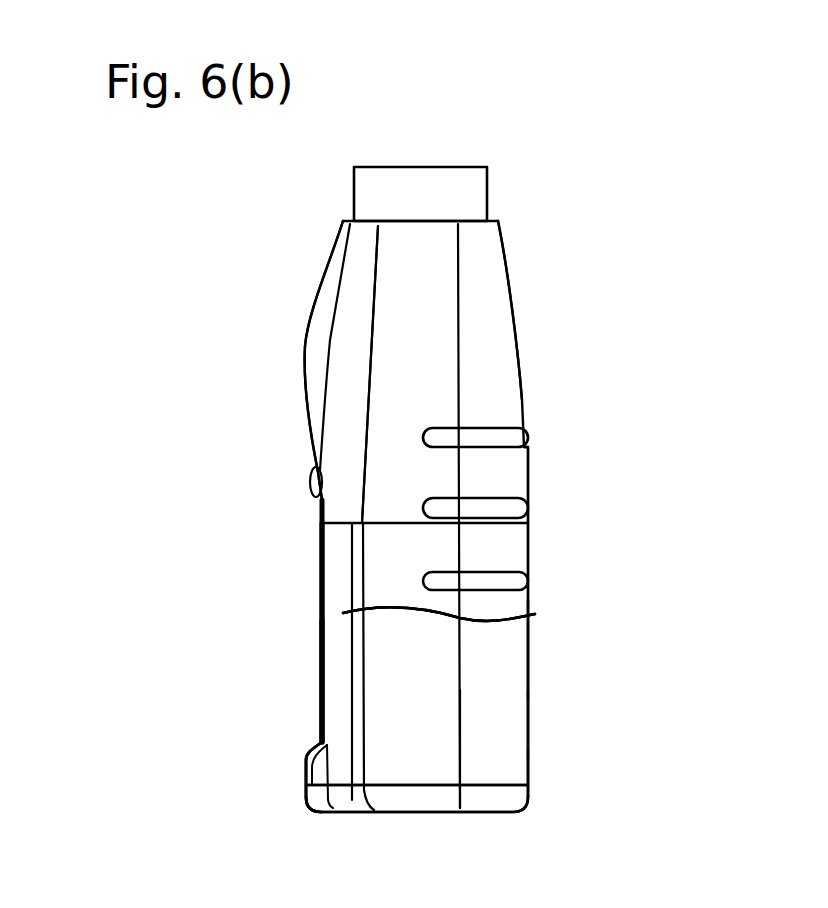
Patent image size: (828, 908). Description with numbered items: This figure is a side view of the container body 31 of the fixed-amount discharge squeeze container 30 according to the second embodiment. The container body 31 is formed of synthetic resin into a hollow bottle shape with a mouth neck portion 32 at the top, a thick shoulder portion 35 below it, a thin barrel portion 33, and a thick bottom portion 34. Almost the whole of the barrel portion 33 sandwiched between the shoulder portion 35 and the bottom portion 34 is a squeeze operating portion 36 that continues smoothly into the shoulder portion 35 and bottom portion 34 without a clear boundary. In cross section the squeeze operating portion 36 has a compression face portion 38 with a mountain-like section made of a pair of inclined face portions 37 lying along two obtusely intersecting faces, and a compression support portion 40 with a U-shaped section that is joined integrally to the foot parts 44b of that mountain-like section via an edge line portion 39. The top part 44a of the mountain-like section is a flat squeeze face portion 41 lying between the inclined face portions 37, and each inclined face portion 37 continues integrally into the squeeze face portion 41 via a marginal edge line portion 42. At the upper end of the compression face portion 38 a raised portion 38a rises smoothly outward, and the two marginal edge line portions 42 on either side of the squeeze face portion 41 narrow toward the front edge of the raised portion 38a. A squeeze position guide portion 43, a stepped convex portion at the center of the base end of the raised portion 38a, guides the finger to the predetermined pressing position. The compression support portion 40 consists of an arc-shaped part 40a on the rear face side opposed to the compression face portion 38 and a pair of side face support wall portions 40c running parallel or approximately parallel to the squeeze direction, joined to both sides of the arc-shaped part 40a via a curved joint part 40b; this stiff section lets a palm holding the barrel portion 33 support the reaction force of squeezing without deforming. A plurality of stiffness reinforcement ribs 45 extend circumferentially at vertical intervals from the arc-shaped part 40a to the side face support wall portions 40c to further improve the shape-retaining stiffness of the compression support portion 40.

The fixed-amount discharge squeeze container 30 is at (312, 220).
The container body 31 is at (511, 287).
The mouth neck portion 32 is at (462, 191).
The barrel portion 33 is at (487, 388).
The bottom portion 34 is at (495, 802).
The shoulder portion 35 is at (358, 272).
The squeeze operating portion 36 is at (322, 560).
The inclined face portions 37 is at (530, 617).
The compression face portion 38 is at (320, 668).
The raised portion 38a is at (306, 397).
The edge line portion 39 is at (357, 755).
The compression support portion 40 is at (503, 481).
The arc-shaped part 40a is at (532, 655).
The curved joint part 40b is at (462, 693).
The side face support wall portions 40c is at (430, 760).
The squeeze face portion 41 is at (343, 613).
The marginal edge line portion 42 is at (330, 703).
The squeeze position guide portion 43 is at (311, 480).
The top part 44a is at (370, 645).
The foot parts 44b is at (263, 790).
The stiffness reinforcement ribs 45 is at (507, 438).